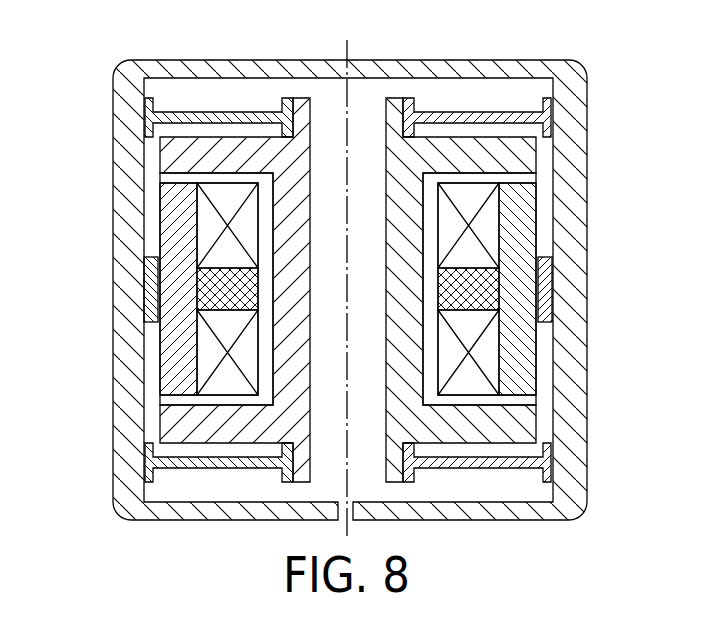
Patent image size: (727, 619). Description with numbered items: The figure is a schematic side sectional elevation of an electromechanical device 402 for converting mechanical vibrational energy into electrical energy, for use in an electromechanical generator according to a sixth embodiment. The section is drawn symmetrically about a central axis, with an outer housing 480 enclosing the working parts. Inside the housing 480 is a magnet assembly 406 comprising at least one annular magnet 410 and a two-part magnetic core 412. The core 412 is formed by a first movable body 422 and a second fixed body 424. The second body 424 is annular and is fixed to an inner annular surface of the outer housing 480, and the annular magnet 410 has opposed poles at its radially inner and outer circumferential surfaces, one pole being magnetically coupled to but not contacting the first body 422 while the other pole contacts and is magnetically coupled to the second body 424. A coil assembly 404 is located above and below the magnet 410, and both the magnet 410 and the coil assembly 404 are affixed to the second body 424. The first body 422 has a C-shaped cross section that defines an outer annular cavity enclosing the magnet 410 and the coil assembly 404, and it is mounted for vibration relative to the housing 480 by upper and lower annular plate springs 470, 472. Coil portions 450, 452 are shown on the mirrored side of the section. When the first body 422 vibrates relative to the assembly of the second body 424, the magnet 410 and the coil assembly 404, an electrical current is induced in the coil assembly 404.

The electromechanical device 402 is at (337, 303).
The coil assembly 404 is at (205, 350).
The magnet assembly 406 is at (165, 252).
The annular magnet 410 is at (200, 282).
The two-part magnetic core 412 is at (167, 230).
The first movable body 422 is at (282, 203).
The second fixed body 424 is at (168, 190).
The first coil 450 is at (488, 210).
The second coil 452 is at (488, 367).
The upper annular plate spring 470 is at (217, 112).
The lower annular plate spring 472 is at (185, 470).
The outer housing 480 is at (135, 521).